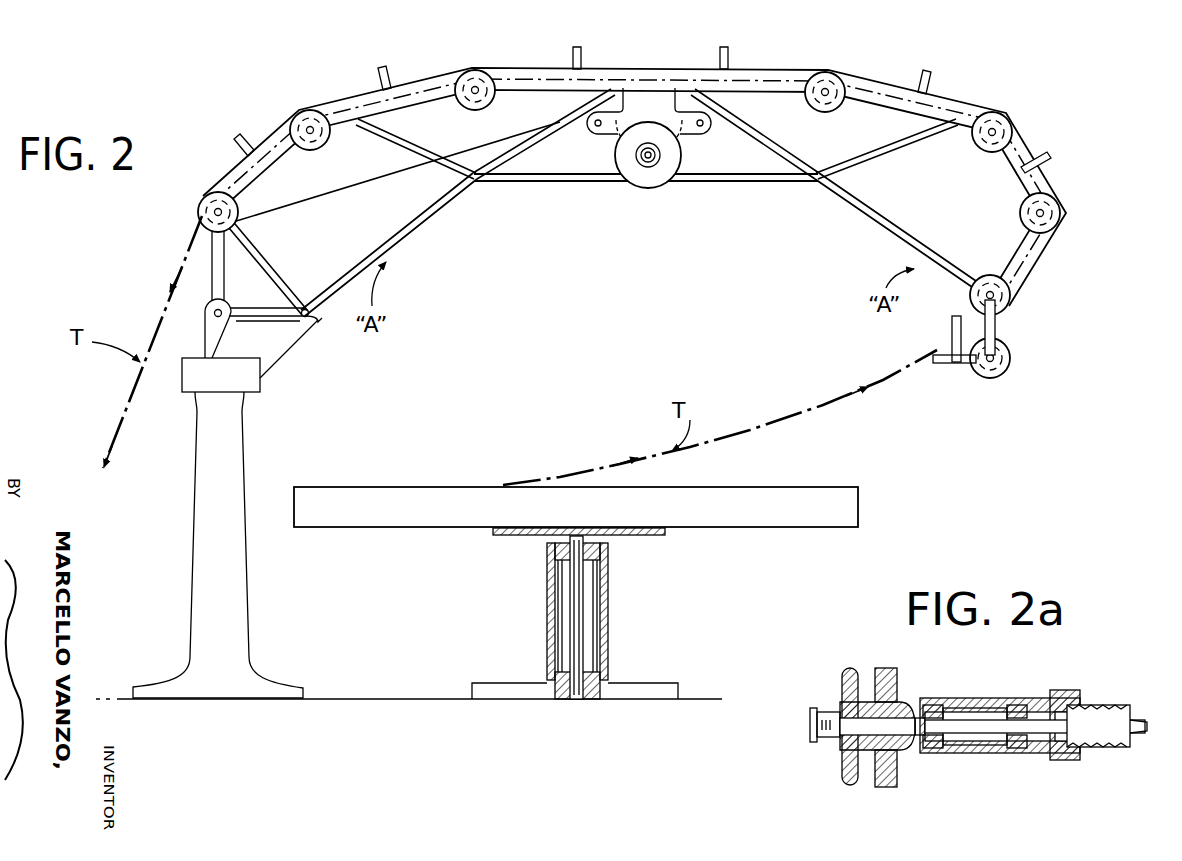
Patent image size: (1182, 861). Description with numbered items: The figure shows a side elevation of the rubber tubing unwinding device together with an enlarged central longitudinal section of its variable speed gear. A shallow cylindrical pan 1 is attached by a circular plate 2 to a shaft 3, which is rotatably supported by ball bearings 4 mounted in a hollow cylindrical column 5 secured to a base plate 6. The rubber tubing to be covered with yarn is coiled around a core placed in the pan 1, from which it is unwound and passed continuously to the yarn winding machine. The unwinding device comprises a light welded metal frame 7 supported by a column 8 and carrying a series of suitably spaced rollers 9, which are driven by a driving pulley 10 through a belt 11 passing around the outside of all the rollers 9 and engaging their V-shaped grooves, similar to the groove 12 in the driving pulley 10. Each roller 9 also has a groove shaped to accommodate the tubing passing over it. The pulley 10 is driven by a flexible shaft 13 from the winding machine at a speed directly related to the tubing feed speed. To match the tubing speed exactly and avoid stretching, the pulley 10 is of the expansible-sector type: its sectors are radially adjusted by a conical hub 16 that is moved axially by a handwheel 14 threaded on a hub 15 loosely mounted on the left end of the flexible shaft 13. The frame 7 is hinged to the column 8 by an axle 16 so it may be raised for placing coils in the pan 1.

In FIG. 2, the shallow cylindrical pan 1 is at (860, 516).
In FIG. 2, the circular plate 2 is at (525, 535).
In FIG. 2, the shaft 3 is at (576, 607).
In FIG. 2, the ball bearings 4 is at (600, 550).
In FIG. 2, the hollow cylindrical column 5 is at (608, 625).
In FIG. 2, the base plate 6 is at (642, 690).
In FIG. 2, the welded metal frame 7 is at (403, 237).
In FIG. 2, the column 8 is at (229, 584).
In FIG. 2, the rollers 9 is at (294, 114).
In FIG. 2, the driving pulley 10 is at (633, 165).
In FIG. 2a, the driving pulley 10 is at (890, 685).
In FIG. 2, the belt 11 is at (318, 203).
In FIG. 2a, the groove 12 is at (890, 788).
In FIG. 2, the flexible shaft 13 is at (655, 162).
In FIG. 2a, the flexible shaft 13 is at (1130, 737).
In FIG. 2a, the handwheel 14 is at (845, 680).
In FIG. 2a, the hub 15 is at (835, 736).
In FIG. 2, the conical hub 16 is at (214, 315).
In FIG. 2a, the conical hub 16 is at (900, 746).